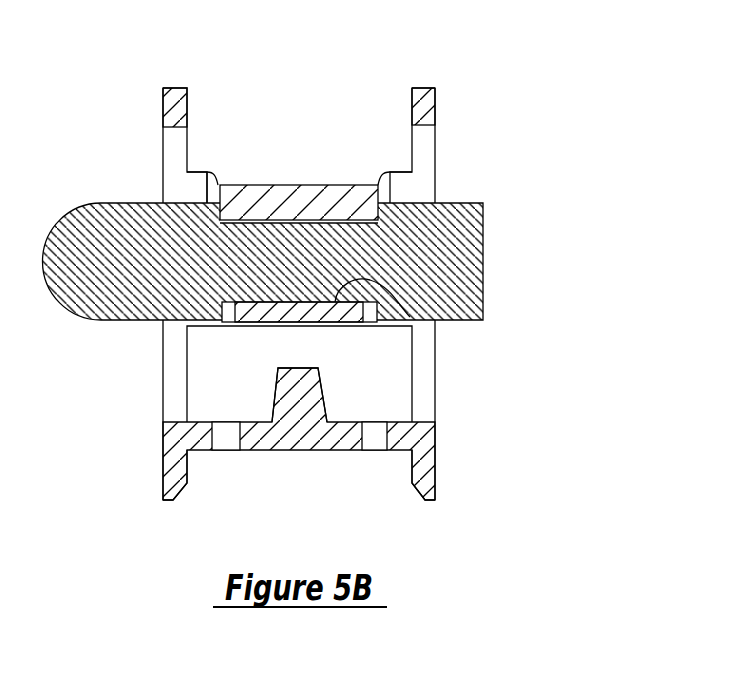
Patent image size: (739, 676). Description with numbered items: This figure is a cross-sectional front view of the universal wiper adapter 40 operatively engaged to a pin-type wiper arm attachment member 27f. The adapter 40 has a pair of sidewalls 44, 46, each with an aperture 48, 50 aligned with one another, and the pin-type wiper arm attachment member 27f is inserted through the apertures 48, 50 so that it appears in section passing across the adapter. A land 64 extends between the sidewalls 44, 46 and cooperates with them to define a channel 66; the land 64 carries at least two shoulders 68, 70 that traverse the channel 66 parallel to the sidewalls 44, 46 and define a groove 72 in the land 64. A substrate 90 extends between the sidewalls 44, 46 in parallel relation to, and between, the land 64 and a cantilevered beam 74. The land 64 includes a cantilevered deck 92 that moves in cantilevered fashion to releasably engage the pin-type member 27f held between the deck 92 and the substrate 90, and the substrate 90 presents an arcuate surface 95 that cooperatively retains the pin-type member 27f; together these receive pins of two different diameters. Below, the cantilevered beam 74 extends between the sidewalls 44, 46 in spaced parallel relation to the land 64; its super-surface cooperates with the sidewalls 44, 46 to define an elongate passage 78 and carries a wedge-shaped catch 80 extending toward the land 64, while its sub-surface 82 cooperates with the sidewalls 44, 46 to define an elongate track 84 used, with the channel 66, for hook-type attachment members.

The pin-type wiper arm attachment member 27f is at (483, 260).
The universal wiper adapter 40 is at (535, 186).
The sidewall 44 is at (423, 88).
The sidewall 46 is at (175, 88).
The aperture 48 is at (441, 198).
The aperture 50 is at (152, 197).
The land 64 is at (380, 183).
The channel 66 is at (217, 141).
The shoulder 68 is at (400, 172).
The shoulder 70 is at (195, 172).
The groove 72 is at (222, 178).
The cantilevered beam 74 is at (302, 442).
The elongate passage 78 is at (212, 375).
The catch 80 is at (325, 393).
The sub-surface 82 is at (257, 450).
The elongate track 84 is at (375, 478).
The substrate 90 is at (333, 325).
The cantilevered deck 92 is at (305, 185).
The arcuate surface 95 is at (410, 317).